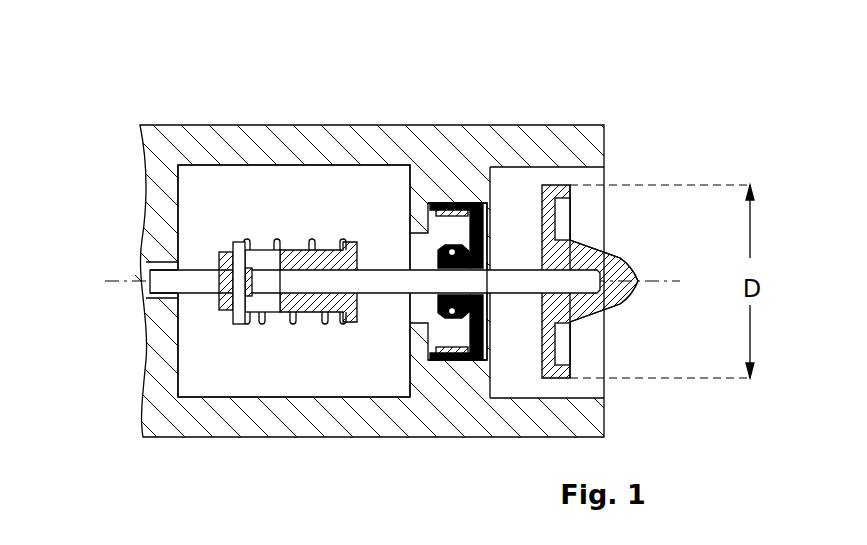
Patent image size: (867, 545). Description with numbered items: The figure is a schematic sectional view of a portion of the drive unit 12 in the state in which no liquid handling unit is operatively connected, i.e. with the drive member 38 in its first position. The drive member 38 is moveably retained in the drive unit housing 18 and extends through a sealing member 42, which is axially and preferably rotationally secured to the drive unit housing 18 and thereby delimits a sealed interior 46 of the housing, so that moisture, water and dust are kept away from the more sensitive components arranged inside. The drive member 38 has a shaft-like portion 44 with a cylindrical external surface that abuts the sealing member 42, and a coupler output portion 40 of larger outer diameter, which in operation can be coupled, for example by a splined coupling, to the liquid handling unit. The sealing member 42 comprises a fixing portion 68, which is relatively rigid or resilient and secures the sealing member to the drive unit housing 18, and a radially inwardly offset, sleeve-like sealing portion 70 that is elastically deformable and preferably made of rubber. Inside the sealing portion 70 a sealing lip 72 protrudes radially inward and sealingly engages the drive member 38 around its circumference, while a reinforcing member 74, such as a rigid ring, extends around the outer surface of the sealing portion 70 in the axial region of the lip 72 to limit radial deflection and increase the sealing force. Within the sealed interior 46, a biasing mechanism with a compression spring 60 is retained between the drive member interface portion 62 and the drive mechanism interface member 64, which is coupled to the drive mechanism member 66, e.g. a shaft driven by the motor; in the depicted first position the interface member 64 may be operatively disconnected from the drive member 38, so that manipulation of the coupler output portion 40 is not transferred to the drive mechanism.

The drive unit 12 is at (258, 145).
The drive unit housing 18 is at (590, 130).
The drive member 38 is at (500, 290).
The coupler output portion 40 is at (611, 262).
The sealing member 42 is at (468, 205).
The portion of the drive member 44 is at (452, 282).
The sealed interior 46 is at (217, 385).
The spring 60 is at (302, 322).
The drive member interface portion 62 is at (352, 253).
The drive mechanism interface member 64 is at (238, 248).
The drive mechanism member 66 is at (163, 288).
The fixing portion 68 is at (462, 248).
The sealing portion 70 is at (490, 262).
The sealing lip 72 is at (432, 262).
The reinforcing member 74 is at (445, 208).